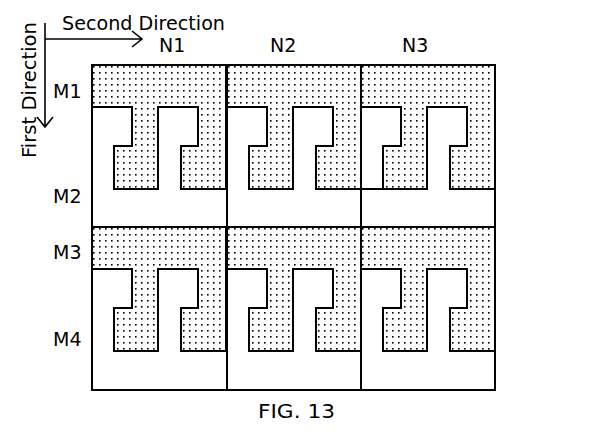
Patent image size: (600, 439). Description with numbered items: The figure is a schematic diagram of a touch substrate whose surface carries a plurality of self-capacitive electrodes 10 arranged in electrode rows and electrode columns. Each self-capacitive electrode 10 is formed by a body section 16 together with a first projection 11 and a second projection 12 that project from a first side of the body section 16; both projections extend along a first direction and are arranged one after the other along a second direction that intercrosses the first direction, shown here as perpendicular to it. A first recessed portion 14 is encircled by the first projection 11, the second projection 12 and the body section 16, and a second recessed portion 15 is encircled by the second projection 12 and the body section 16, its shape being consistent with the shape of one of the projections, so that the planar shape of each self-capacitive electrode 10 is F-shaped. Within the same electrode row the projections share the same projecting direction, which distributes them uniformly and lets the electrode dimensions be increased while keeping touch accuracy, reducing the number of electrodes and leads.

The self-capacitive electrode 10 is at (495, 89).
The first projection 11 is at (371, 166).
The second projection 12 is at (438, 168).
The first recessed portion 14 is at (399, 185).
The second recessed portion 15 is at (463, 188).
The body section 16 is at (422, 213).